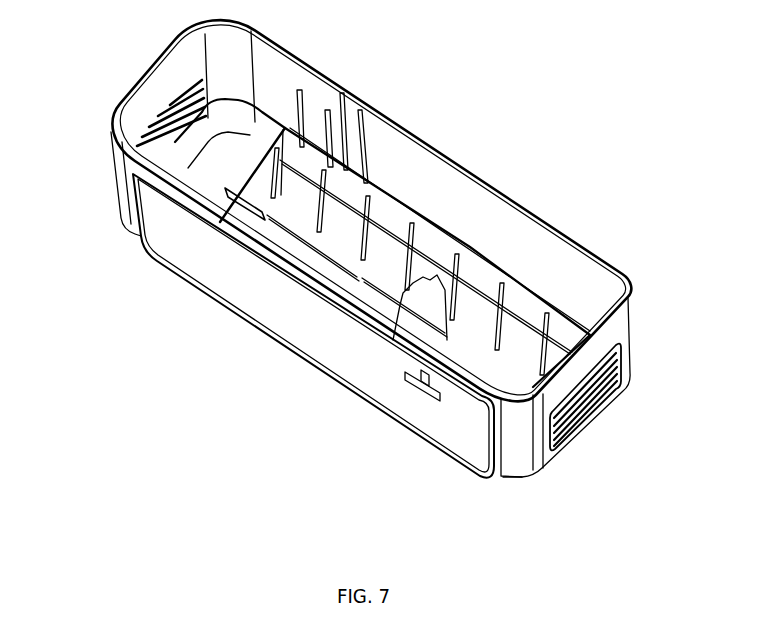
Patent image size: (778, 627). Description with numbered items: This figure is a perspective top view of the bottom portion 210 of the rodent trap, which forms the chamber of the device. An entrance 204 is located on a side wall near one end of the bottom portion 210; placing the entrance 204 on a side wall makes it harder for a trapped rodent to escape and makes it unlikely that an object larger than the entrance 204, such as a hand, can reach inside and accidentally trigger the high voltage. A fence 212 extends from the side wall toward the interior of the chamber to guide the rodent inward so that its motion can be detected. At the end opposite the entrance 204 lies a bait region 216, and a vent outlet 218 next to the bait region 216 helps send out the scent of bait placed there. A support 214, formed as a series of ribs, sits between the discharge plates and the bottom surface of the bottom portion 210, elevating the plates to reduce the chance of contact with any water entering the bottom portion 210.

The bottom portion 210 is at (110, 199).
The entrance 204 is at (451, 421).
The fence 212 is at (403, 378).
The support 214 is at (413, 227).
The bait region 216 is at (238, 148).
The vent outlet 218 is at (172, 108).